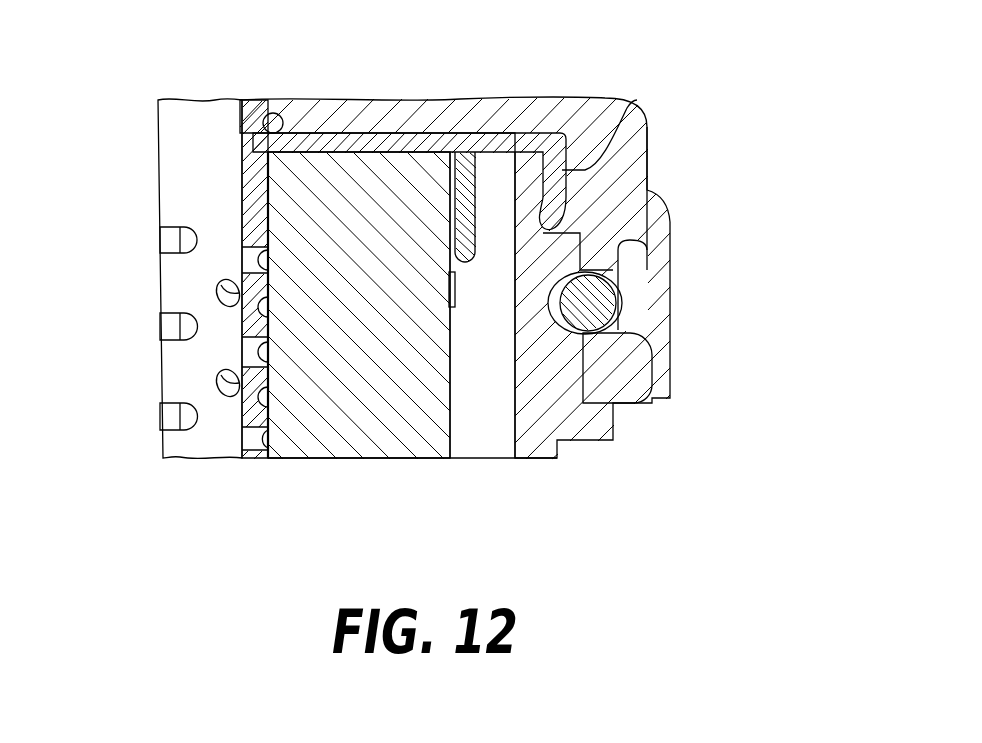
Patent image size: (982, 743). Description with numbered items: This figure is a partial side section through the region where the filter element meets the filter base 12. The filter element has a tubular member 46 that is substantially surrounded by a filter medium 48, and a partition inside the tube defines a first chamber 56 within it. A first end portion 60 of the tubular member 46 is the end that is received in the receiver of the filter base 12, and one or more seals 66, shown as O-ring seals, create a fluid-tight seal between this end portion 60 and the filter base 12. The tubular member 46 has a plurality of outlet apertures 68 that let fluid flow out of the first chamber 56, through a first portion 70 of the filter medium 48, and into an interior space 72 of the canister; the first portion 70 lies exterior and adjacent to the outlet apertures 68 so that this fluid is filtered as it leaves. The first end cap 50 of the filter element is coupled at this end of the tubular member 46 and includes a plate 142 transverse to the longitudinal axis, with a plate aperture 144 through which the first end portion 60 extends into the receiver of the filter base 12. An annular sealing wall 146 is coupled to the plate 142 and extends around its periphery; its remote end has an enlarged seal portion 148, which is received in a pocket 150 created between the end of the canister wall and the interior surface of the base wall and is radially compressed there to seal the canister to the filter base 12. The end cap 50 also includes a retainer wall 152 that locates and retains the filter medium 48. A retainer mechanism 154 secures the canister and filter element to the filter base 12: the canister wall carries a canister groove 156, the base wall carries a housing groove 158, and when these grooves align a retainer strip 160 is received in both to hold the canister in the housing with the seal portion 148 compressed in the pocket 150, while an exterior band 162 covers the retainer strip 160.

The filter base 12 is at (678, 44).
The tubular member 46 is at (387, 116).
The filter medium 48 is at (316, 458).
The first end cap 50 is at (318, 145).
The first chamber 56 is at (215, 163).
The first end portion 60 is at (156, 68).
The seal 66 is at (277, 113).
The outlet aperture 68 is at (217, 292).
The first portion of filter medium 70 is at (363, 441).
The interior space 72 is at (480, 432).
The plate 142 is at (435, 143).
The plate aperture 144 is at (252, 143).
The sealing wall 146 is at (553, 172).
The seal portion 148 is at (560, 203).
The pocket 150 is at (582, 220).
The retainer wall 152 is at (470, 193).
The retainer mechanism 154 is at (742, 258).
The canister groove 156 is at (557, 322).
The housing groove 158 is at (617, 262).
The retainer strip 160 is at (605, 310).
The exterior band 162 is at (655, 365).